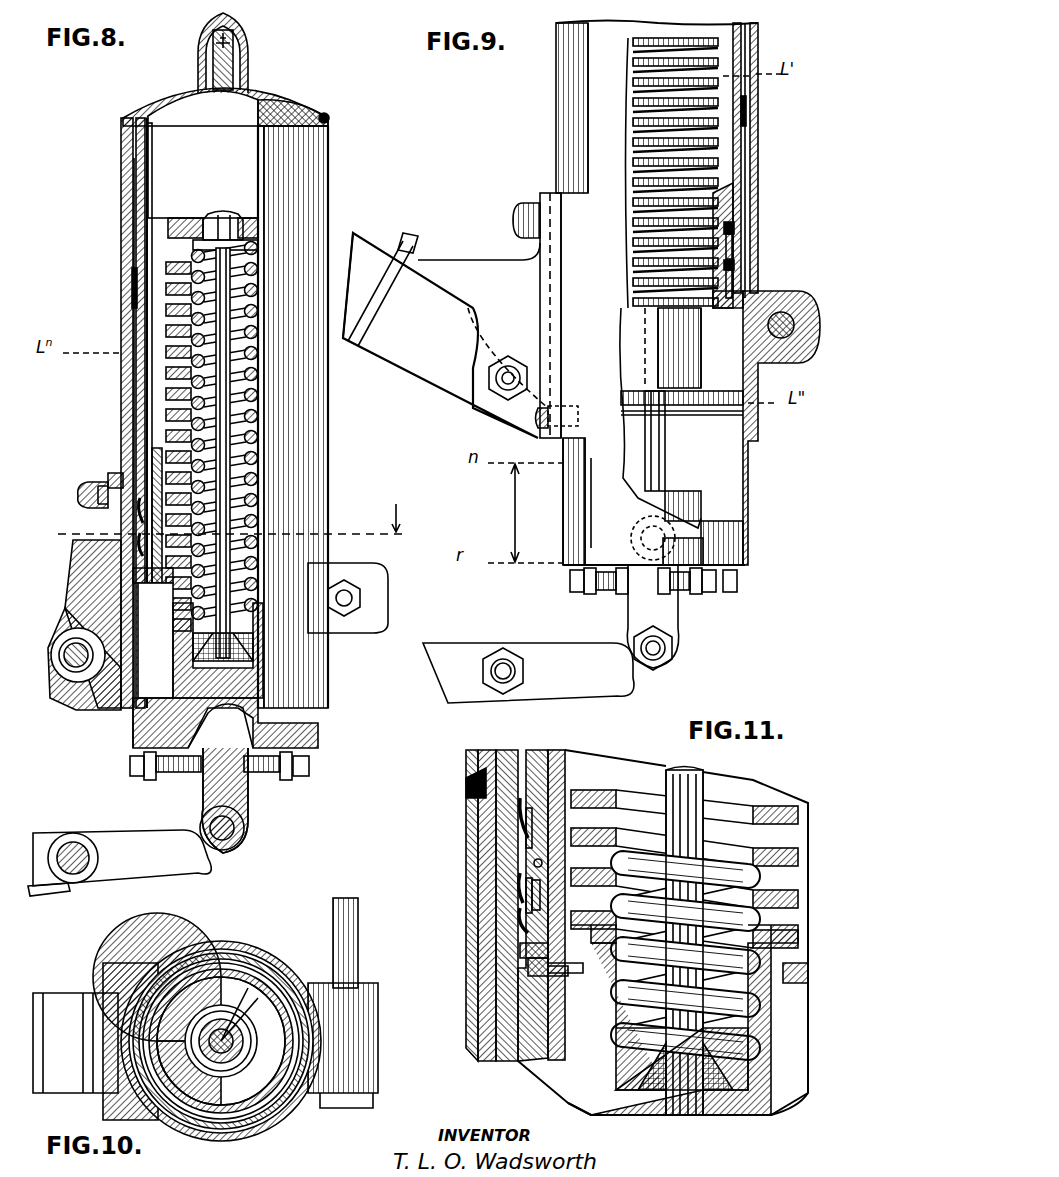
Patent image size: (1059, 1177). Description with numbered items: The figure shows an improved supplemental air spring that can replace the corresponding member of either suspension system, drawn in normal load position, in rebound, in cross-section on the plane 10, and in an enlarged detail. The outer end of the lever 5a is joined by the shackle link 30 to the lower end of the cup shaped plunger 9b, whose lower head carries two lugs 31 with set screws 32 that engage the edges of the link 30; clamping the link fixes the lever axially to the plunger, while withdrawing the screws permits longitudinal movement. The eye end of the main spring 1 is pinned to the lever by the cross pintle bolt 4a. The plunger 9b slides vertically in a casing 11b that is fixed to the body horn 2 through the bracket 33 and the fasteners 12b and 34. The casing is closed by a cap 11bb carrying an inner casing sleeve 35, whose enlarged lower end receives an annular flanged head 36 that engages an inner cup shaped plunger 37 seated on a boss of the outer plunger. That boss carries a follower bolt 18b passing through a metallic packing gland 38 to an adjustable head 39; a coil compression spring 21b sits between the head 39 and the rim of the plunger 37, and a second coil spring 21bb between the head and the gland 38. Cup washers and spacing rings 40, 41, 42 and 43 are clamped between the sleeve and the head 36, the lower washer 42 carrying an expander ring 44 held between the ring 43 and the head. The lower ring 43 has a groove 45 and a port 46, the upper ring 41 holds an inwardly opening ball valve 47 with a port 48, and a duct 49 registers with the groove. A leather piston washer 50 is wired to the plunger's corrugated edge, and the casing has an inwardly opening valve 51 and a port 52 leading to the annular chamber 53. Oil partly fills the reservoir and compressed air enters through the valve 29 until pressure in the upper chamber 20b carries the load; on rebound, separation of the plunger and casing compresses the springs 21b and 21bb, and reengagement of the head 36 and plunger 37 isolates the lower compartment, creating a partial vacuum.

In FIG. 8, the main spring 1 is at (40, 883).
In FIG. 8, the body horn 2 is at (58, 618).
In FIG. 9, the body horn 2 is at (360, 232).
In FIG. 8, the cross pintle bolt 4a is at (70, 868).
In FIG. 9, the cross pintle bolt 4a is at (495, 650).
In FIG. 8, the lever 5a is at (140, 862).
In FIG. 9, the lever 5a is at (440, 640).
In FIG. 8, the cup shaped plunger 9b is at (125, 725).
In FIG. 9, the cup shaped plunger 9b is at (740, 532).
In FIG. 10, the cup shaped plunger 9b is at (190, 1128).
In FIG. 11, the cup shaped plunger 9b is at (640, 1107).
In FIG. 8, the section plane 10 is at (212, 507).
In FIG. 8, the casing 11b is at (305, 165).
In FIG. 9, the casing 11b is at (550, 96).
In FIG. 10, the casing 11b is at (227, 1120).
In FIG. 11, the casing 11b is at (460, 1028).
In FIG. 8, the cap 11bb is at (272, 93).
In FIG. 8, the bolt 12b is at (62, 662).
In FIG. 9, the bolt 12b is at (488, 372).
In FIG. 8, the follower bolt 18b is at (212, 390).
In FIG. 9, the follower bolt 18b is at (657, 463).
In FIG. 10, the follower bolt 18b is at (213, 1028).
In FIG. 11, the follower bolt 18b is at (690, 785).
In FIG. 8, the upper chamber 20b is at (158, 136).
In FIG. 8, the coil compression spring 21b is at (162, 238).
In FIG. 9, the coil compression spring 21b is at (700, 147).
In FIG. 10, the coil compression spring 21b is at (178, 990).
In FIG. 11, the coil compression spring 21b is at (585, 782).
In FIG. 8, the second coil spring 21bb is at (250, 410).
In FIG. 10, the second coil spring 21bb is at (250, 990).
In FIG. 11, the second coil spring 21bb is at (636, 840).
In FIG. 8, the valve 29 is at (219, 42).
In FIG. 8, the shackle link 30 is at (258, 824).
In FIG. 9, the shackle link 30 is at (668, 612).
In FIG. 8, the lugs 31 is at (165, 766).
In FIG. 8, the set screws 32 is at (118, 766).
In FIG. 9, the set screws 32 is at (560, 580).
In FIG. 8, the bracket 33 is at (70, 570).
In FIG. 9, the bracket 33 is at (458, 248).
In FIG. 9, the screws 34 is at (528, 410).
In FIG. 10, the screws 34 is at (98, 968).
In FIG. 8, the inner casing sleeve 35 is at (130, 175).
In FIG. 9, the inner casing sleeve 35 is at (745, 33).
In FIG. 11, the inner casing sleeve 35 is at (530, 740).
In FIG. 8, the annular flanged head 36 is at (140, 455).
In FIG. 9, the annular flanged head 36 is at (712, 303).
In FIG. 10, the annular flanged head 36 is at (280, 1110).
In FIG. 11, the annular flanged head 36 is at (510, 990).
In FIG. 8, the inner cup shaped plunger 37 is at (175, 610).
In FIG. 9, the inner cup shaped plunger 37 is at (695, 370).
In FIG. 11, the inner cup shaped plunger 37 is at (595, 1065).
In FIG. 8, the metallic packing gland 38 is at (186, 640).
In FIG. 11, the metallic packing gland 38 is at (615, 1040).
In FIG. 8, the adjustable head 39 is at (168, 216).
In FIG. 9, the cup washer 40 is at (728, 218).
In FIG. 11, the cup washer 40 is at (512, 812).
In FIG. 9, the upper ring 41 is at (726, 240).
In FIG. 10, the upper ring 41 is at (258, 1100).
In FIG. 11, the upper ring 41 is at (518, 830).
In FIG. 9, the lower washer 42 is at (726, 275).
In FIG. 11, the lower washer 42 is at (520, 890).
In FIG. 9, the lower ring 43 is at (728, 258).
In FIG. 11, the lower ring 43 is at (522, 962).
In FIG. 11, the expander ring 44 is at (515, 945).
In FIG. 11, the groove 45 is at (528, 905).
In FIG. 11, the port 46 is at (515, 920).
In FIG. 10, the ball valve 47 is at (135, 1035).
In FIG. 11, the ball valve 47 is at (512, 872).
In FIG. 11, the port 48 is at (526, 855).
In FIG. 11, the duct 49 is at (548, 968).
In FIG. 8, the leather piston washer 50 is at (122, 293).
In FIG. 9, the leather piston washer 50 is at (748, 118).
In FIG. 8, the valve 51 is at (72, 484).
In FIG. 8, the port 52 is at (100, 470).
In FIG. 11, the port 52 is at (462, 750).
In FIG. 8, the annular chamber 53 is at (140, 413).
In FIG. 9, the annular chamber 53 is at (750, 172).